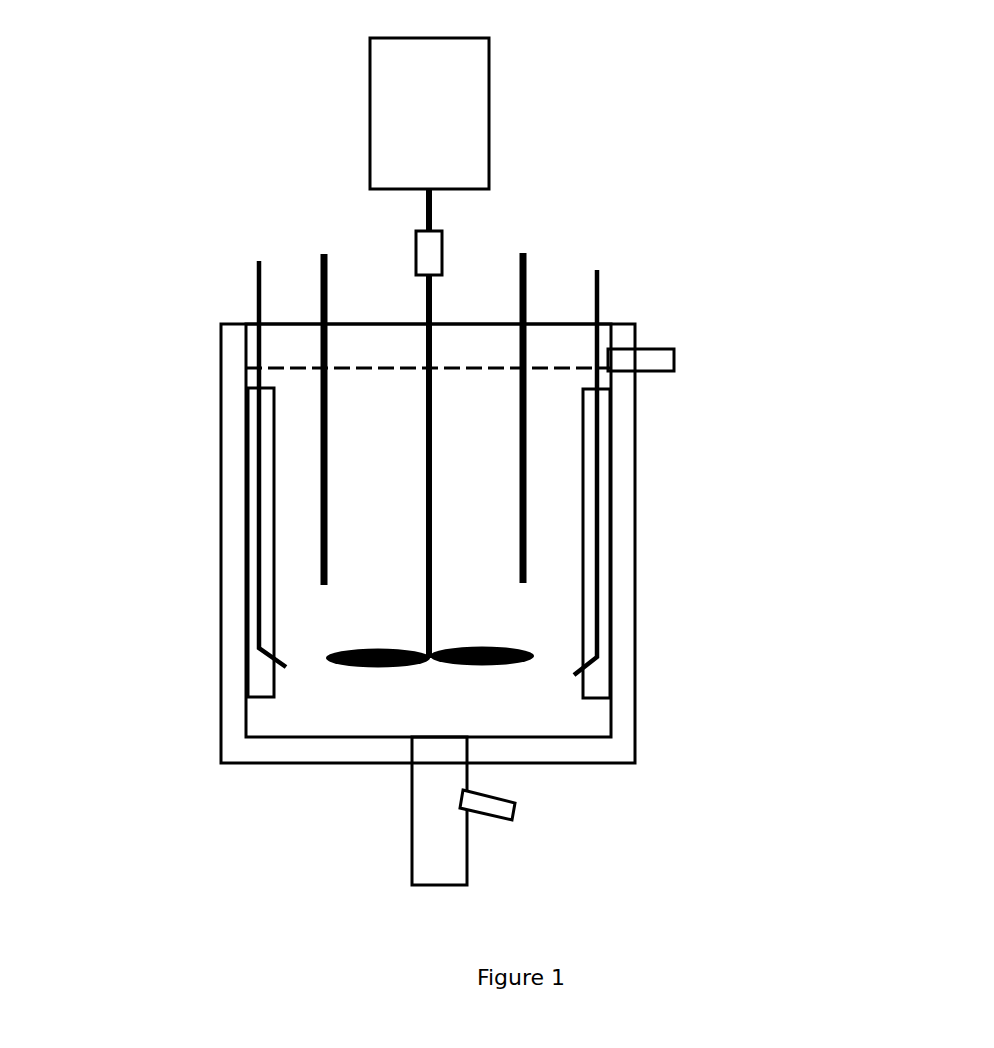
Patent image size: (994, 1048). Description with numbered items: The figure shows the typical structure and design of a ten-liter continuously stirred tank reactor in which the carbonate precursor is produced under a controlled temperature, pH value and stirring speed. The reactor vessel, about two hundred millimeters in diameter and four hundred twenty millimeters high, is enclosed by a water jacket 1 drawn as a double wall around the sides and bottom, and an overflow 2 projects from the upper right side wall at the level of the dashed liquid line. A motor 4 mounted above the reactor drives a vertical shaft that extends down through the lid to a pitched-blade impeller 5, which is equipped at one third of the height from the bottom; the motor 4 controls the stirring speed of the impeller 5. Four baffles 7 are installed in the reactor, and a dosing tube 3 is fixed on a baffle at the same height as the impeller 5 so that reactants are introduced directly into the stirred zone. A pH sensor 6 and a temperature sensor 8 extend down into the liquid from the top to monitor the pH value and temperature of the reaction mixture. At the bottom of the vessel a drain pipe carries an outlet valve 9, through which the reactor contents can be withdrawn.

The water jacket 1 is at (620, 540).
The overflow 2 is at (662, 358).
The dosing tube 3 is at (606, 265).
The motor 4 is at (475, 110).
The impeller 5 is at (348, 650).
The pH sensor 6 is at (320, 520).
The baffle 7 is at (252, 418).
The temperature sensor 8 is at (509, 413).
The outlet valve 9 is at (447, 812).